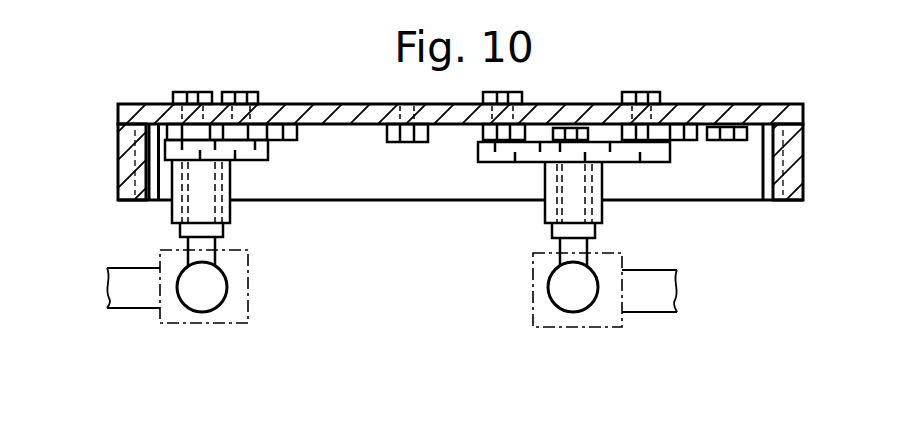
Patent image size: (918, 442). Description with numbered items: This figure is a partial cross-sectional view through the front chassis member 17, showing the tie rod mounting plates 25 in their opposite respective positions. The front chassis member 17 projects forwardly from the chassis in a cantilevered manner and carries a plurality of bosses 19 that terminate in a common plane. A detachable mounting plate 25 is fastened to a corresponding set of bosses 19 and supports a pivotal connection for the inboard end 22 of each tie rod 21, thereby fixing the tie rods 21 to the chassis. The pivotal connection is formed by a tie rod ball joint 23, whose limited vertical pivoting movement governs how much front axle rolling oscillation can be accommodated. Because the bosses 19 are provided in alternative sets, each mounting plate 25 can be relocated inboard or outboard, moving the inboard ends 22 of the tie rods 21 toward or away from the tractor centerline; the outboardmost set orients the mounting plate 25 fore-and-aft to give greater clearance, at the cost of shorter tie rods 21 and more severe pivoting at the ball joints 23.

The front chassis member 17 is at (158, 104).
The bosses 19 is at (170, 132).
The tie rods 21 is at (103, 300).
The inboard end 22 is at (158, 263).
The tie rod ball joints 23 is at (247, 315).
The mounting plate 25 is at (258, 153).